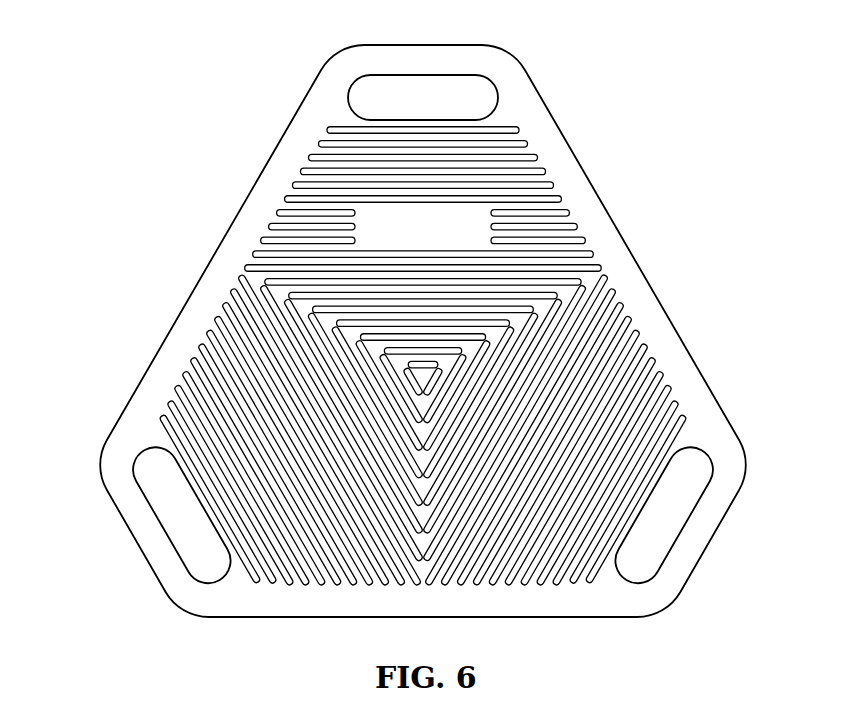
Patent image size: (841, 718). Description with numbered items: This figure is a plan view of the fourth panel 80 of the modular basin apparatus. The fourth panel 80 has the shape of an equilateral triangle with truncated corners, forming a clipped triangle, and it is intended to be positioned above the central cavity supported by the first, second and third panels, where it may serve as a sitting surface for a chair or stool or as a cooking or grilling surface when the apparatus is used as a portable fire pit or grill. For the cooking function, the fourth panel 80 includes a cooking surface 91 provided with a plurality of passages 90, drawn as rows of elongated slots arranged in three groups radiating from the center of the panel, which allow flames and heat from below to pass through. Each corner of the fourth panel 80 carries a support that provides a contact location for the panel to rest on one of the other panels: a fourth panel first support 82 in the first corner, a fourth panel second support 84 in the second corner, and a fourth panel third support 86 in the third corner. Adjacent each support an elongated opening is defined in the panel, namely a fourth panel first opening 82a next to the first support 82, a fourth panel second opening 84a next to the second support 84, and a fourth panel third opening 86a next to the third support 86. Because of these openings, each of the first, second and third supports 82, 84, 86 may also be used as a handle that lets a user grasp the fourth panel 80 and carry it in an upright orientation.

The fourth panel 80 is at (703, 183).
The fourth panel first support 82 is at (404, 45).
The fourth panel first opening 82a is at (458, 99).
The fourth panel second support 84 is at (706, 548).
The fourth panel second opening 84a is at (667, 527).
The fourth panel third support 86 is at (131, 538).
The fourth panel third opening 86a is at (170, 505).
The passages 90 is at (653, 366).
The cooking surface 91 is at (613, 260).